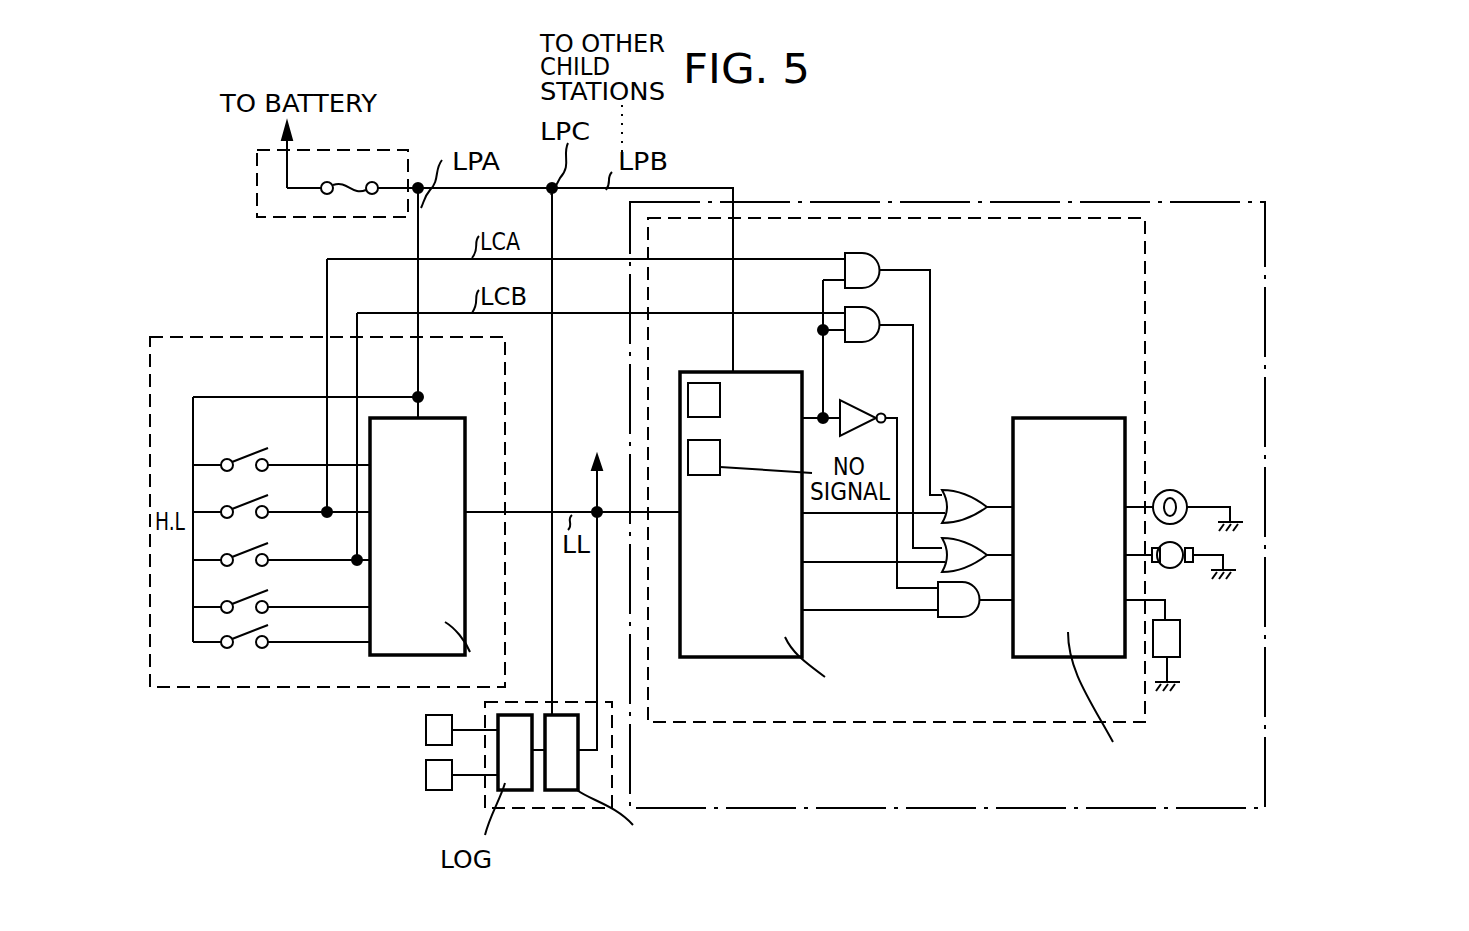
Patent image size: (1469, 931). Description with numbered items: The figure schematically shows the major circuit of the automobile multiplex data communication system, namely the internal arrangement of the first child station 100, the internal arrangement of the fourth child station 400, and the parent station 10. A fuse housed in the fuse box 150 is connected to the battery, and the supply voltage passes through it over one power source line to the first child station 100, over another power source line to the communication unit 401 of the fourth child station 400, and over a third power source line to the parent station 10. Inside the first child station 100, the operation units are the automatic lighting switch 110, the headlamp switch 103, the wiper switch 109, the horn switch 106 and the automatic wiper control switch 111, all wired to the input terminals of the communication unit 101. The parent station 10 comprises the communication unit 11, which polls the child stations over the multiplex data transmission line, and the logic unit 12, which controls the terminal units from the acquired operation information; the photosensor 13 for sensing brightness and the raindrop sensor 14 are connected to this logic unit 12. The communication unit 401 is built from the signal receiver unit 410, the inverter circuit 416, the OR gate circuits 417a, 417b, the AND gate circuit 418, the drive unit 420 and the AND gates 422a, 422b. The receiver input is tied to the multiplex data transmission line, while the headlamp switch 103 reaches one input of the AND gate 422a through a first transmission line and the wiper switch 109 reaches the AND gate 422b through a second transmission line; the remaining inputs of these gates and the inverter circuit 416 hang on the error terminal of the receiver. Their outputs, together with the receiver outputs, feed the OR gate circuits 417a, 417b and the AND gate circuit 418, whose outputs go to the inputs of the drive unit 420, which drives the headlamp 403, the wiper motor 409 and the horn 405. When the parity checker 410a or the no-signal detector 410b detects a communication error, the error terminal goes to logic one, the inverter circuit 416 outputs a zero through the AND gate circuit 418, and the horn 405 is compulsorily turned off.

The fuse box 150 is at (400, 152).
The first child station 100 is at (395, 732).
The communication unit 101 is at (455, 418).
The automatic lighting switch 110 is at (244, 458).
The headlamp switch 103 is at (258, 492).
The wiper switch 109 is at (250, 540).
The horn switch 106 is at (258, 590).
The automatic wiper control switch 111 is at (262, 648).
The photosensor 13 is at (426, 744).
The raindrop sensor 14 is at (433, 790).
The parent station 10 is at (556, 810).
The logic unit 12 is at (525, 790).
The communication unit 11 is at (580, 775).
The fourth child station 400 is at (1380, 131).
The communication unit 401 is at (932, 723).
The signal receiver unit 410 is at (783, 372).
The parity checker 410a is at (697, 383).
The no-signal detector 410b is at (722, 451).
The inverter circuit 416 is at (862, 400).
The AND gate circuit 422a is at (882, 266).
The AND gate circuit 422b is at (887, 312).
The OR gate circuit 417a is at (968, 490).
The OR gate circuit 417b is at (908, 556).
The AND gate circuit 418 is at (962, 618).
The drive unit 420 is at (1068, 418).
The headlamp 403 is at (1193, 492).
The wiper motor 409 is at (1193, 545).
The horn 405 is at (1185, 645).